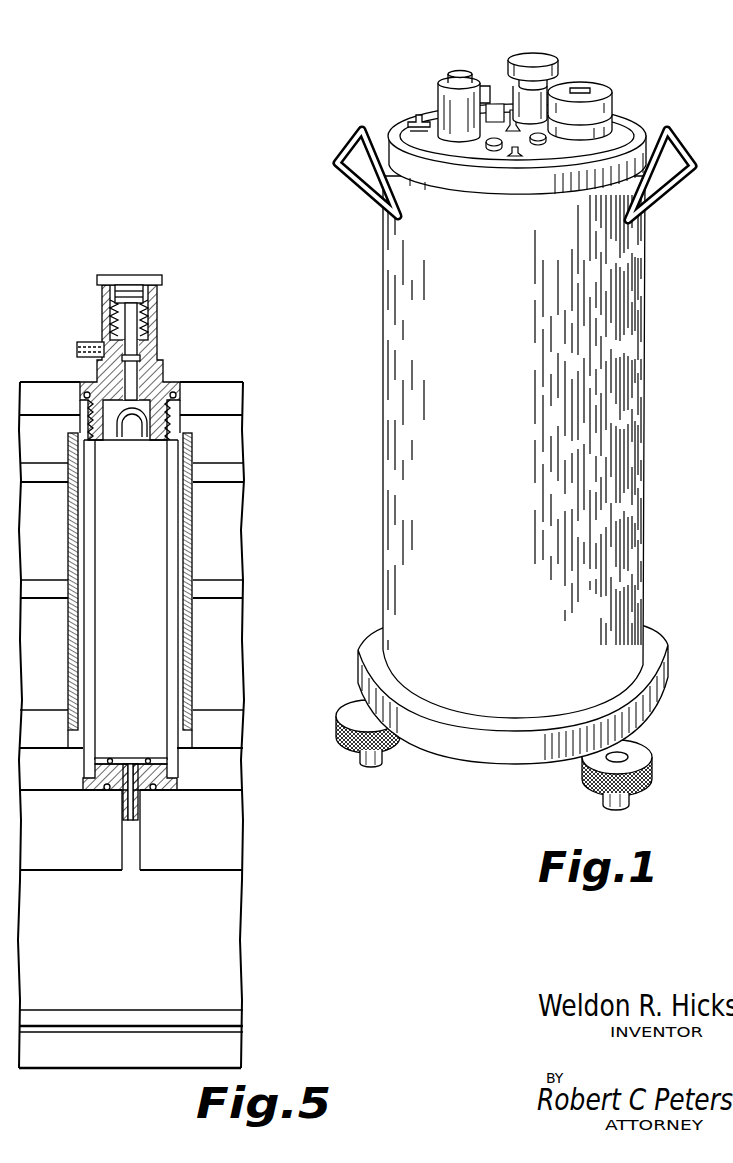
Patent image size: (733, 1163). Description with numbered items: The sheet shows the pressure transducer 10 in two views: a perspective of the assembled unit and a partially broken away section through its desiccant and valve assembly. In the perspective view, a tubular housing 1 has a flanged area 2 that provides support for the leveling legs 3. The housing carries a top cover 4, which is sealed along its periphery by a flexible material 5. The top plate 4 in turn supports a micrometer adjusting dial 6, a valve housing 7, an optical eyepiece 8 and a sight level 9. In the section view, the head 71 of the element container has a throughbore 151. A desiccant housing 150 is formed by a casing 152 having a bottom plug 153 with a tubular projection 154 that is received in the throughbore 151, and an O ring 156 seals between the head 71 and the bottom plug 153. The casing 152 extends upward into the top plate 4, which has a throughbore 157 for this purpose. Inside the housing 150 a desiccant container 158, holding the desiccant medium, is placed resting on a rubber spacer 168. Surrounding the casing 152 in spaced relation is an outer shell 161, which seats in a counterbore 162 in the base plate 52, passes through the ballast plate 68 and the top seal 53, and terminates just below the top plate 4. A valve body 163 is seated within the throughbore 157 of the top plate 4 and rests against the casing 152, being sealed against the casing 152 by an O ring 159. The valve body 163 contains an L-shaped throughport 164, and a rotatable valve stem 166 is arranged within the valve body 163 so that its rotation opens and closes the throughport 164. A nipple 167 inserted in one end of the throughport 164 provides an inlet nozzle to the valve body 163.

In FIG. 1, the tubular housing 1 is at (643, 297).
In FIG. 1, the flanged area 2 is at (648, 634).
In FIG. 1, the leveling legs 3 is at (640, 749).
In FIG. 1, the top cover 4 is at (617, 130).
In FIG. 5, the top cover 4 is at (218, 400).
In FIG. 1, the flexible material 5 is at (633, 152).
In FIG. 1, the micrometer adjusting dial 6 is at (594, 86).
In FIG. 1, the valve housing 7 is at (532, 58).
In FIG. 1, the optical eyepiece 8 is at (447, 74).
In FIG. 1, the sight level 9 is at (406, 119).
In FIG. 1, the pressure transducer 10 is at (362, 236).
In FIG. 5, the base plate 52 is at (227, 760).
In FIG. 5, the top seal 53 is at (220, 477).
In FIG. 5, the ballast plate 68 is at (227, 588).
In FIG. 5, the head 71 is at (230, 843).
In FIG. 5, the desiccant housing 150 is at (153, 407).
In FIG. 5, the throughbore 151 is at (140, 872).
In FIG. 5, the casing 152 is at (170, 548).
In FIG. 5, the bottom plug 153 is at (167, 792).
In FIG. 5, the tubular projection 154 is at (142, 813).
In FIG. 5, the O ring 156 is at (110, 790).
In FIG. 5, the throughbore 157 is at (193, 383).
In FIG. 5, the desiccant container 158 is at (107, 745).
In FIG. 5, the O ring 159 is at (175, 417).
In FIG. 5, the outer shell 161 is at (192, 572).
In FIG. 5, the counterbore 162 is at (193, 720).
In FIG. 5, the valve body 163 is at (88, 383).
In FIG. 5, the L-shaped throughport 164 is at (128, 348).
In FIG. 5, the rotatable valve stem 166 is at (154, 298).
In FIG. 5, the nipple 167 is at (78, 343).
In FIG. 5, the rubber spacer 168 is at (155, 757).